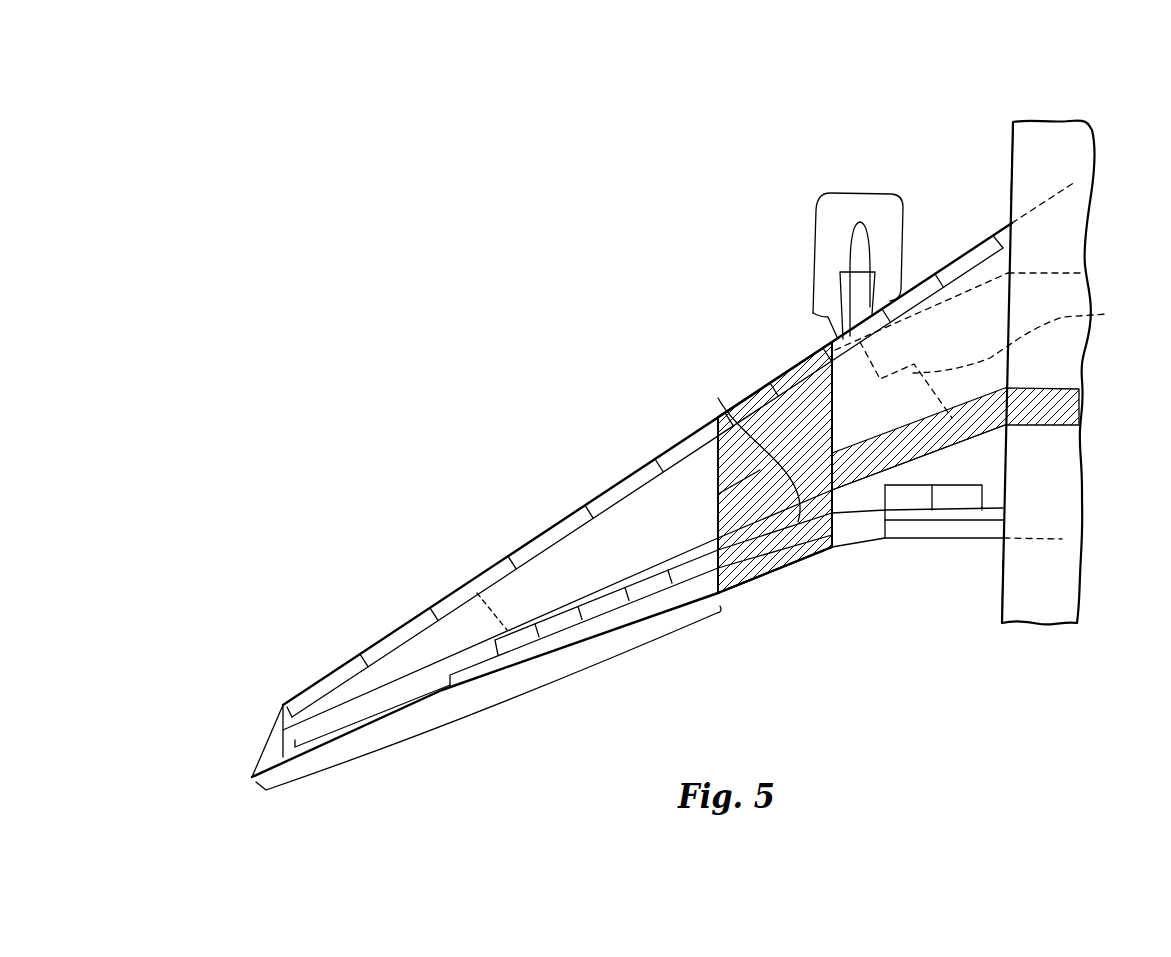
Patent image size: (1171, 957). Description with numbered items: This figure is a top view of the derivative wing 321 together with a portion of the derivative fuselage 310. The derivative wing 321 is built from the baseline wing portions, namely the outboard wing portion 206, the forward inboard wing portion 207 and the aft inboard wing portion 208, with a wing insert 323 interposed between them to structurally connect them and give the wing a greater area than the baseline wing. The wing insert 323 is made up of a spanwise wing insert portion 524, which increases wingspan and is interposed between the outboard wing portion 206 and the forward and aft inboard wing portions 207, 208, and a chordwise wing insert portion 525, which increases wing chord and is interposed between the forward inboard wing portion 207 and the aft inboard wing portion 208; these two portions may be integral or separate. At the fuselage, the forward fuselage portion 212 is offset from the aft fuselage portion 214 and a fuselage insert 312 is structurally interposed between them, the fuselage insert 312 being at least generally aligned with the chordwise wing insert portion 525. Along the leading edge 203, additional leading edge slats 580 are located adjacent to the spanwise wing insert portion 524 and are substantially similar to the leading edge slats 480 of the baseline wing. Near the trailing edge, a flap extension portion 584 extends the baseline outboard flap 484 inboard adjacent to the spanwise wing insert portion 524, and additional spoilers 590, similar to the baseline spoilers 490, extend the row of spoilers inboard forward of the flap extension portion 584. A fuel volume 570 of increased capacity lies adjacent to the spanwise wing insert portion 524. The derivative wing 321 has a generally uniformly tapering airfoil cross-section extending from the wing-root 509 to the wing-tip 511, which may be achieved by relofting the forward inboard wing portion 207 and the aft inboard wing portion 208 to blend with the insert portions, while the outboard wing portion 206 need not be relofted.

The derivative fuselage 310 is at (1012, 128).
The forward fuselage portion 212 is at (1010, 156).
The forward inboard wing portion 207 is at (965, 283).
The wing insert 323 is at (733, 268).
The additional leading edge slats 580 is at (790, 380).
The additional spoilers 590 is at (742, 449).
The leading edge slats 480 is at (665, 440).
The leading edge 203 is at (485, 575).
The derivative wing 321 is at (268, 748).
The wing-tip 511 is at (252, 777).
The outboard wing portion 206 is at (500, 702).
The spoilers 490 is at (687, 567).
The spanwise wing insert portion 524 is at (717, 494).
The outboard flap 484 is at (665, 600).
The flap extension portion 584 is at (785, 567).
The aft inboard wing portion 208 is at (865, 503).
The wing-root 509 is at (987, 542).
The fuselage insert 312 is at (1083, 386).
The chordwise wing insert portion 525 is at (955, 435).
The fuel volume 570 is at (1003, 422).
The aft fuselage portion 214 is at (1002, 607).